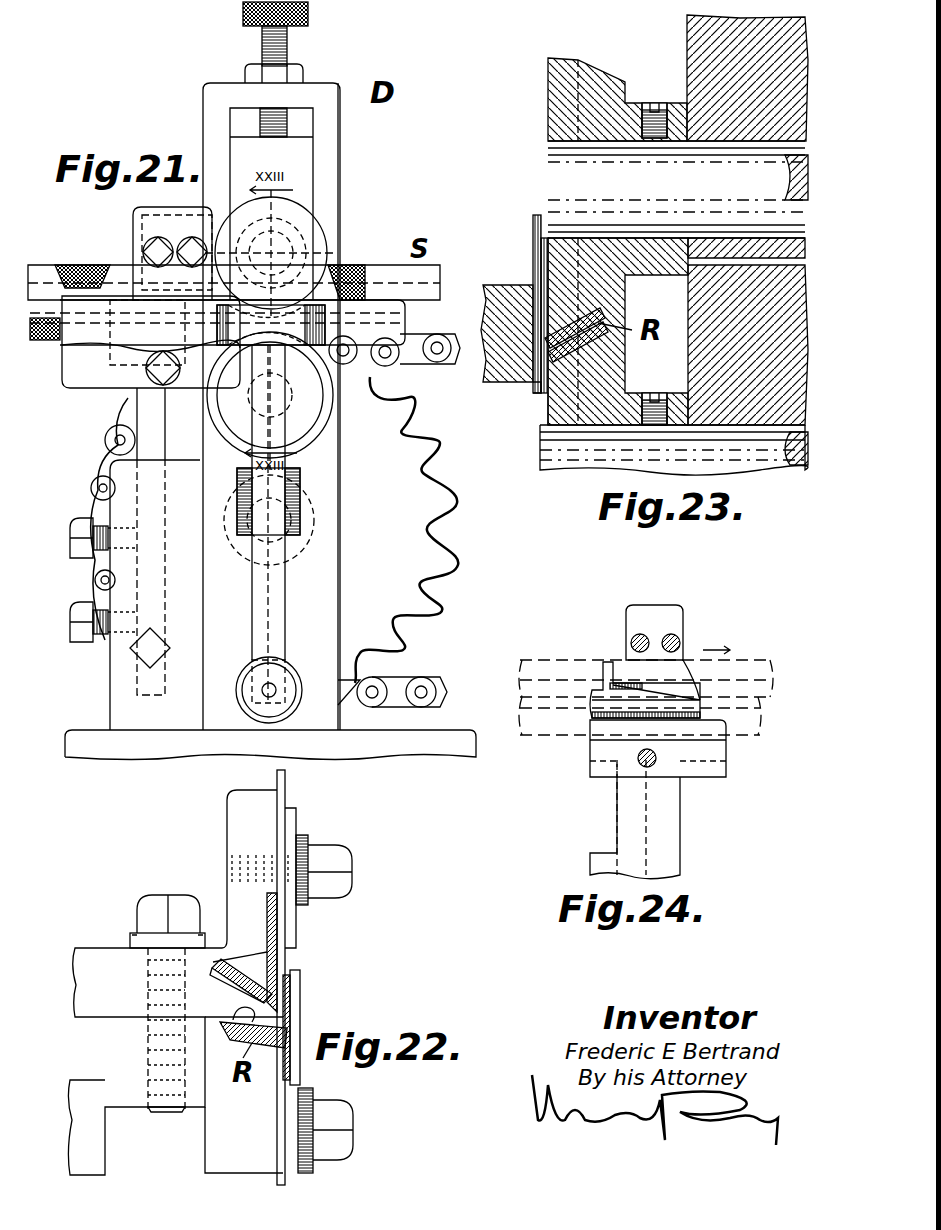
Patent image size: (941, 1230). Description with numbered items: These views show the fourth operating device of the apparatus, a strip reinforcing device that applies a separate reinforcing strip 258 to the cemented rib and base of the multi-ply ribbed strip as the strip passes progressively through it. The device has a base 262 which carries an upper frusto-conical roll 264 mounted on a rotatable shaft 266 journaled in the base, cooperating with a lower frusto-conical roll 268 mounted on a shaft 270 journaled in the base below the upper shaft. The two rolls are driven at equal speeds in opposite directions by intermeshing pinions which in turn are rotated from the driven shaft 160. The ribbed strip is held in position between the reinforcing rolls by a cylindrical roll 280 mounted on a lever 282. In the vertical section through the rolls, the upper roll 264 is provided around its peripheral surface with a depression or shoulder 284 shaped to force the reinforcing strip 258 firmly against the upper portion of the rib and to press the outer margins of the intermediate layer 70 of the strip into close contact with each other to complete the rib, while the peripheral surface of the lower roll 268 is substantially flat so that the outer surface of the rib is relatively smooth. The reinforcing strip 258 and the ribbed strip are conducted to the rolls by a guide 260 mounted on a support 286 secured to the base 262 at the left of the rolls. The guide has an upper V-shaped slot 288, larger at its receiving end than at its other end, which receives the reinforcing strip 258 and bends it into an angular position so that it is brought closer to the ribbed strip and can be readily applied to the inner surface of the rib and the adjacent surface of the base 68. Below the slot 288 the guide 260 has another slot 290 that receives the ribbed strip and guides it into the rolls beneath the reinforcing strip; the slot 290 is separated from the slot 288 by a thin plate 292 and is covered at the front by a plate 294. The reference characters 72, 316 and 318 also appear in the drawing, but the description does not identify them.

In FIG. 21, the base 68 is at (50, 343).
In FIG. 23, the base 68 is at (530, 388).
In FIG. 22, the base 68 is at (292, 1000).
In FIG. 23, the intermediate layer 70 is at (545, 406).
In FIG. 23, the frame member 72 is at (507, 320).
In FIG. 21, the driven shaft 160 is at (278, 555).
In FIG. 21, the reinforcing strip 258 is at (38, 268).
In FIG. 23, the reinforcing strip 258 is at (542, 232).
In FIG. 22, the reinforcing strip 258 is at (272, 925).
In FIG. 21, the guide 260 is at (132, 232).
In FIG. 24, the guide 260 is at (670, 613).
In FIG. 22, the guide 260 is at (237, 810).
In FIG. 21, the base 262 is at (330, 620).
In FIG. 21, the frusto-conical roll 264 is at (293, 213).
In FIG. 23, the frusto-conical roll 264 is at (598, 75).
In FIG. 21, the rotatable shaft 266 is at (288, 248).
In FIG. 23, the rotatable shaft 266 is at (618, 155).
In FIG. 21, the lower frusto-conical roll 268 is at (312, 428).
In FIG. 23, the lower frusto-conical roll 268 is at (565, 410).
In FIG. 21, the shaft 270 is at (292, 385).
In FIG. 23, the shaft 270 is at (740, 448).
In FIG. 21, the cylindrical roll 280 is at (348, 297).
In FIG. 23, the cylindrical roll 280 is at (512, 278).
In FIG. 21, the lever 282 is at (257, 613).
In FIG. 23, the depression or shoulder 284 is at (576, 60).
In FIG. 21, the support 286 is at (145, 419).
In FIG. 24, the support 286 is at (622, 810).
In FIG. 24, the V-shaped slot 288 is at (612, 690).
In FIG. 22, the V-shaped slot 288 is at (225, 978).
In FIG. 24, the slot 290 is at (593, 720).
In FIG. 22, the slot 290 is at (219, 1019).
In FIG. 22, the thin plate 292 is at (285, 940).
In FIG. 22, the plate 294 is at (298, 1020).
In FIG. 21, the chain 316 is at (437, 330).
In FIG. 21, the chain 318 is at (438, 558).